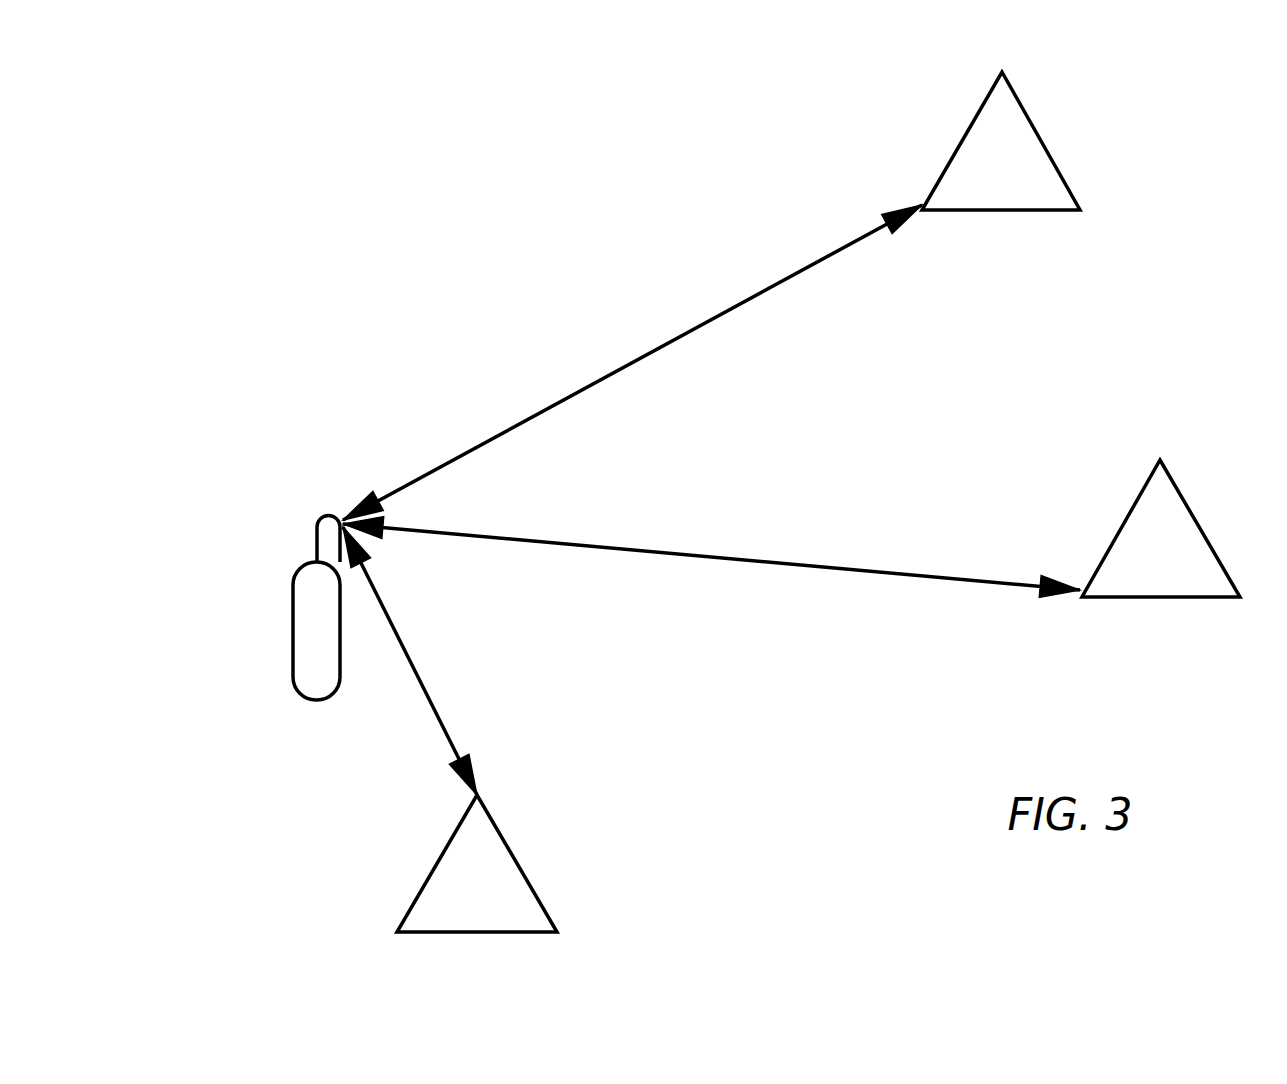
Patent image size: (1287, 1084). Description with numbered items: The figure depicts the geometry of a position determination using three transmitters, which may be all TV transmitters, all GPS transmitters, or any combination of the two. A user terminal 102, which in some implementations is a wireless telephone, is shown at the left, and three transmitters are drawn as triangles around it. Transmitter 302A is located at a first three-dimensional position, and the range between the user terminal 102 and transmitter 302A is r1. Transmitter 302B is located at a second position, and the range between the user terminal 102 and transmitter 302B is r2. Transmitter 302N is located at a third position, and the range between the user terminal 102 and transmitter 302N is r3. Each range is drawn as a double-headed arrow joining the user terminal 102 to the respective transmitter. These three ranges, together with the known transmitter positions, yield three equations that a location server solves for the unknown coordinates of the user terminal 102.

The user terminal 102 is at (293, 627).
The transmitter 302A is at (1001, 141).
The transmitter 302B is at (1161, 528).
The transmitter 302N is at (477, 863).
The range r1 is at (632, 362).
The range r2 is at (711, 557).
The range r3 is at (410, 661).